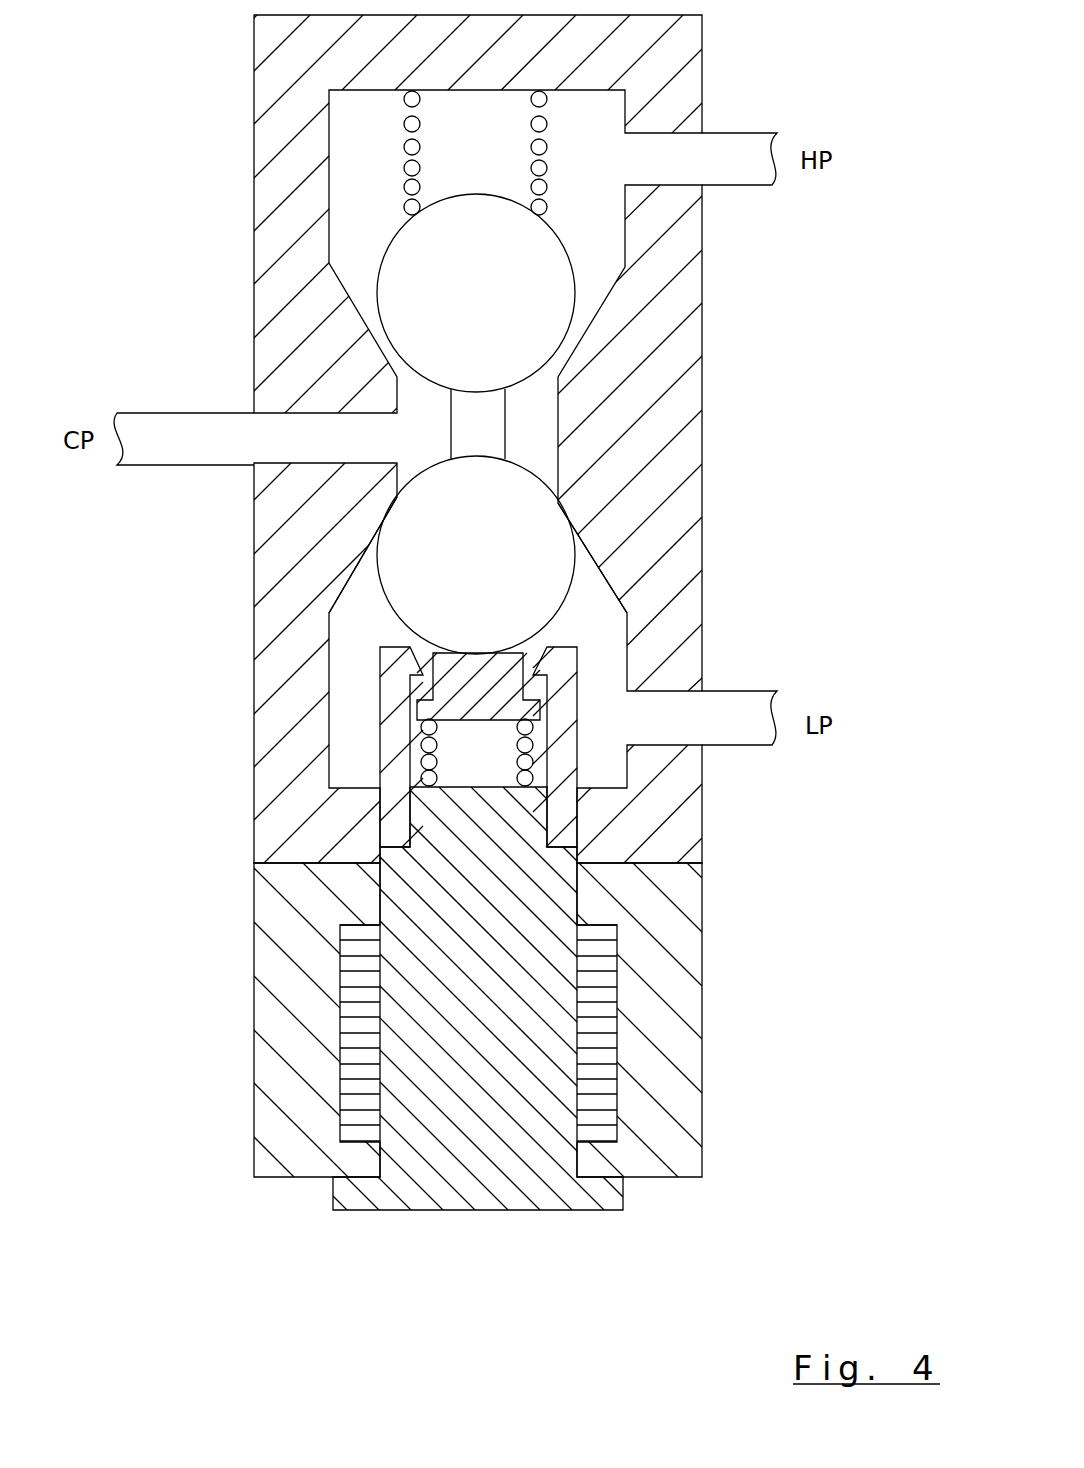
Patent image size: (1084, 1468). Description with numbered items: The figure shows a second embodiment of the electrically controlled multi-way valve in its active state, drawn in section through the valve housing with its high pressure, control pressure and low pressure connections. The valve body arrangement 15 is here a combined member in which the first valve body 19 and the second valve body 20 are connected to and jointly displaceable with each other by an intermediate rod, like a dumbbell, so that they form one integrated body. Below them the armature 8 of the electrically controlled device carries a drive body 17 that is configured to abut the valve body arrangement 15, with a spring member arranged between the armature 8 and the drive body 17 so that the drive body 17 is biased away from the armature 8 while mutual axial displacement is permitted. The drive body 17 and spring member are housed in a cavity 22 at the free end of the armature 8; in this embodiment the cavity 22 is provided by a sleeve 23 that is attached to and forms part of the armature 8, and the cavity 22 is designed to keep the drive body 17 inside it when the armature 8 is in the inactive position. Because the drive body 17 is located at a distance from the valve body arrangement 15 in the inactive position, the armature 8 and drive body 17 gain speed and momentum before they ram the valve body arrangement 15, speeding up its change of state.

The armature 8 is at (432, 1212).
The valve body arrangement 15 is at (380, 578).
The drive body 17 is at (457, 675).
The first valve body 19 is at (527, 547).
The second valve body 20 is at (530, 312).
The cavity 22 is at (477, 425).
The sleeve 23 is at (397, 738).